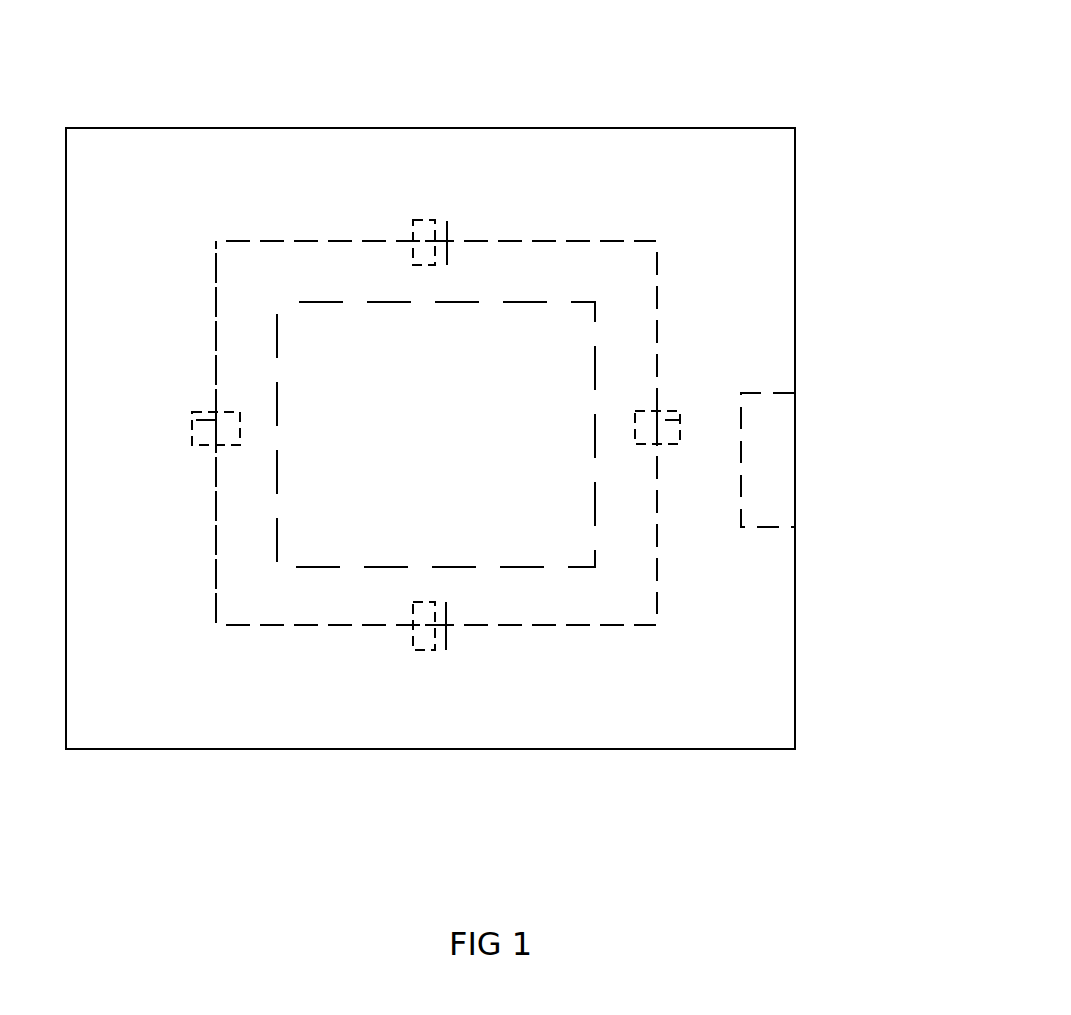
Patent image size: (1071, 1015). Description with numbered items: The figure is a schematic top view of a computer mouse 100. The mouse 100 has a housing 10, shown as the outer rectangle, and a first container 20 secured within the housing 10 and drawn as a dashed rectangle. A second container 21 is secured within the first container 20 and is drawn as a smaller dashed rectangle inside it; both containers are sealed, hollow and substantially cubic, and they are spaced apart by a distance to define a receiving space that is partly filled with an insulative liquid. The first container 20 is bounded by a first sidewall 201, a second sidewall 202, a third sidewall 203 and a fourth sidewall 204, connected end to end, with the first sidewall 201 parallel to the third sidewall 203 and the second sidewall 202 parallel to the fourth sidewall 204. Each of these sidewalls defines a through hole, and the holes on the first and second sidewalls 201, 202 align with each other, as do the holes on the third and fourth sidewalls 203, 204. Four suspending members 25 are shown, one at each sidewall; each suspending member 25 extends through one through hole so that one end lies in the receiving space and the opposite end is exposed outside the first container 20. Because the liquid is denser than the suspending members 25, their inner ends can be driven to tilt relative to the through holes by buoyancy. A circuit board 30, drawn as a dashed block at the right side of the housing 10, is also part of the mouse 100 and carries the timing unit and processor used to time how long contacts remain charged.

The computer mouse 100 is at (677, 91).
The housing 10 is at (297, 128).
The first container 20 is at (658, 300).
The first sidewall 201 is at (264, 241).
The second sidewall 202 is at (657, 368).
The third sidewall 203 is at (540, 627).
The fourth sidewall 204 is at (216, 343).
The second container 21 is at (555, 293).
The suspending member 25 is at (430, 220).
The circuit board 30 is at (773, 473).